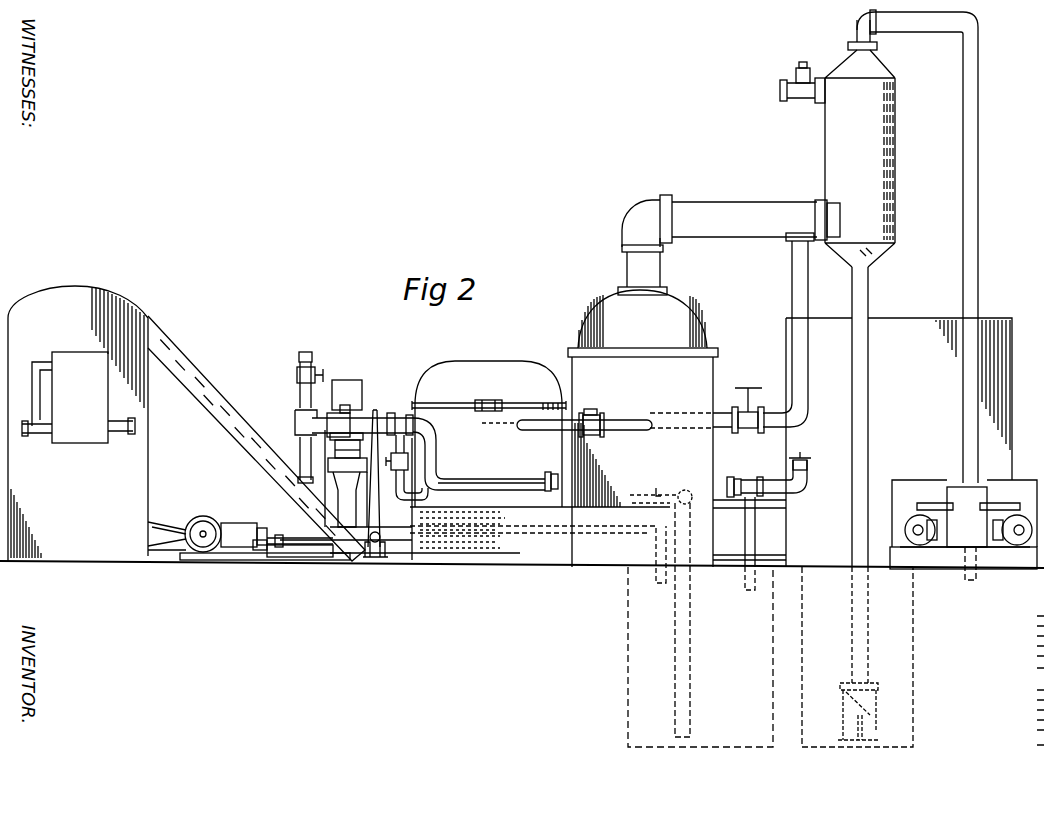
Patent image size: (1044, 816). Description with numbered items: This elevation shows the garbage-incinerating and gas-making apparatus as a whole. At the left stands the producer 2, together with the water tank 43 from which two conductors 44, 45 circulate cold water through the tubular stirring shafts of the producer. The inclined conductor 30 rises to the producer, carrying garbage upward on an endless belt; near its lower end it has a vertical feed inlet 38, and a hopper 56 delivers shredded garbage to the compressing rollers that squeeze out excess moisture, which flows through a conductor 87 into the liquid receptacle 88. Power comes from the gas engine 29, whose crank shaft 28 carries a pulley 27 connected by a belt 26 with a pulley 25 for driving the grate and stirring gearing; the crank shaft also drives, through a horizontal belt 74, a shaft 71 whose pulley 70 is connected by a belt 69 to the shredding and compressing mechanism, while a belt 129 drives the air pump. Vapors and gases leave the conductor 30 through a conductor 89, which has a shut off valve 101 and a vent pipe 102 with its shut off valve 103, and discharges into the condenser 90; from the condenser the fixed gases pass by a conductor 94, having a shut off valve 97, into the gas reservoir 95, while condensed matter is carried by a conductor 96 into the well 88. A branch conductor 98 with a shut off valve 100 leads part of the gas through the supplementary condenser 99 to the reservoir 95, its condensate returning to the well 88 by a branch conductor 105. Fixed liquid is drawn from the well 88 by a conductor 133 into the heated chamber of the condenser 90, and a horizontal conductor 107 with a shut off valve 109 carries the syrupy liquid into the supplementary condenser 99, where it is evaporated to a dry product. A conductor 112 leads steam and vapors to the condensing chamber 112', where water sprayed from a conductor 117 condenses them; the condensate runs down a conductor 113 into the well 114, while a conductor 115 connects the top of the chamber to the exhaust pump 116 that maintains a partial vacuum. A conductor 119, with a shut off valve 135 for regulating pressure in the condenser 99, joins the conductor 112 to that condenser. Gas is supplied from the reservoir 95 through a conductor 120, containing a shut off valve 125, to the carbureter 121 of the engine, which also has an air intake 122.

The producer 2 is at (78, 423).
The pulley 25 is at (180, 520).
The belt 26 is at (173, 522).
The pulley 27 is at (204, 528).
The crank shaft 28 is at (222, 527).
The gas engine 29 is at (261, 527).
The inclined conductor 30 is at (230, 404).
The vertical feed inlet 38 is at (346, 495).
The water tank 43 is at (70, 397).
The conductor 44 is at (130, 434).
The conductor 45 is at (40, 436).
The hopper 56 is at (348, 380).
The belt 69 is at (381, 510).
The pulley 70 is at (380, 545).
The horizontal shaft 71 is at (366, 552).
The horizontal belt 74 is at (293, 538).
The conductor 87 is at (411, 531).
The liquid reservoir 88 is at (628, 661).
The conductor 89 is at (300, 450).
The condenser 90 is at (643, 406).
The conductor 94 is at (792, 489).
The gas reservoir 95 is at (899, 442).
The conductor 96 is at (755, 531).
The shut off valve 97 is at (800, 453).
The branch conductor 98 is at (432, 466).
The supplementary condenser 99 is at (491, 494).
The shut off valve 100 is at (408, 460).
The shut off valve 101 is at (343, 406).
The vent pipe 102 is at (303, 352).
The shut off valve 103 is at (327, 367).
The branch conductor 105 is at (653, 488).
The horizontal conductor 107 is at (584, 440).
The shut off valve 109 is at (592, 409).
The conductor 112 is at (731, 212).
The condensing chamber 112' is at (860, 143).
The conductor 113 is at (870, 418).
The well 114 is at (896, 638).
The conductor 115 is at (950, 22).
The exhaust pump 116 is at (922, 480).
The conductor 117 is at (801, 95).
The conductor 119 is at (792, 283).
The conductor 120 is at (309, 558).
The carbureter 121 is at (255, 548).
The air intake 122 is at (258, 565).
The shut off valve 125 is at (283, 552).
The belt 129 is at (160, 550).
The conductor 133 is at (683, 613).
The shut off valve 135 is at (750, 388).